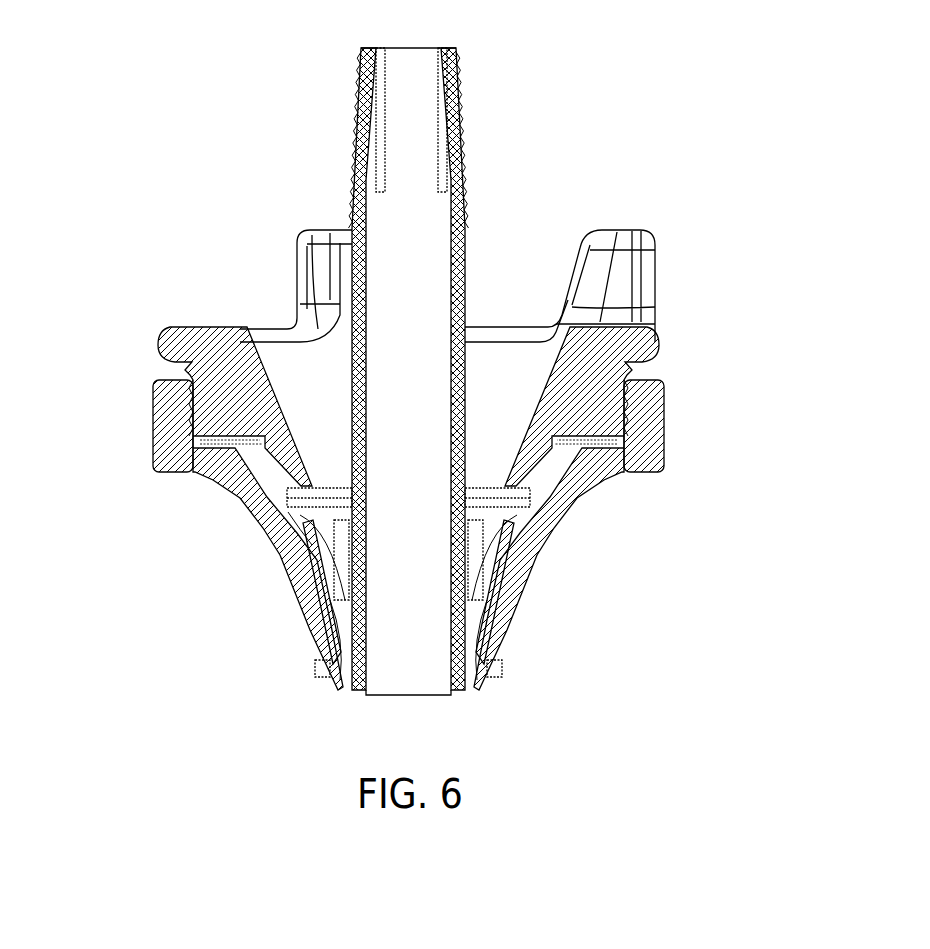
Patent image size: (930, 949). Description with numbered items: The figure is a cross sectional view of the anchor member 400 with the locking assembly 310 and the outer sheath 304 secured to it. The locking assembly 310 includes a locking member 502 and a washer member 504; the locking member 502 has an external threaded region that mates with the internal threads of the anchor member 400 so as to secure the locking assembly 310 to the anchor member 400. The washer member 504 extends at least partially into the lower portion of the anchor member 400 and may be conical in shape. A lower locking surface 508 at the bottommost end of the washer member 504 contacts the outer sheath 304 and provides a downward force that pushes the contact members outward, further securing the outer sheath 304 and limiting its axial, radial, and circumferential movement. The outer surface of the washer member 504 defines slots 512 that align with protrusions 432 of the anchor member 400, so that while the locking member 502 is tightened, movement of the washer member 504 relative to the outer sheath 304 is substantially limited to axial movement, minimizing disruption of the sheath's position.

The outer sheath 304 is at (480, 158).
The locking assembly 310 is at (658, 281).
The locking member 502 is at (170, 332).
The anchor member 400 is at (671, 421).
The washer member 504 is at (287, 498).
The slots 512 is at (307, 538).
The protrusions 432 is at (303, 560).
The lower locking surface 508 is at (337, 622).